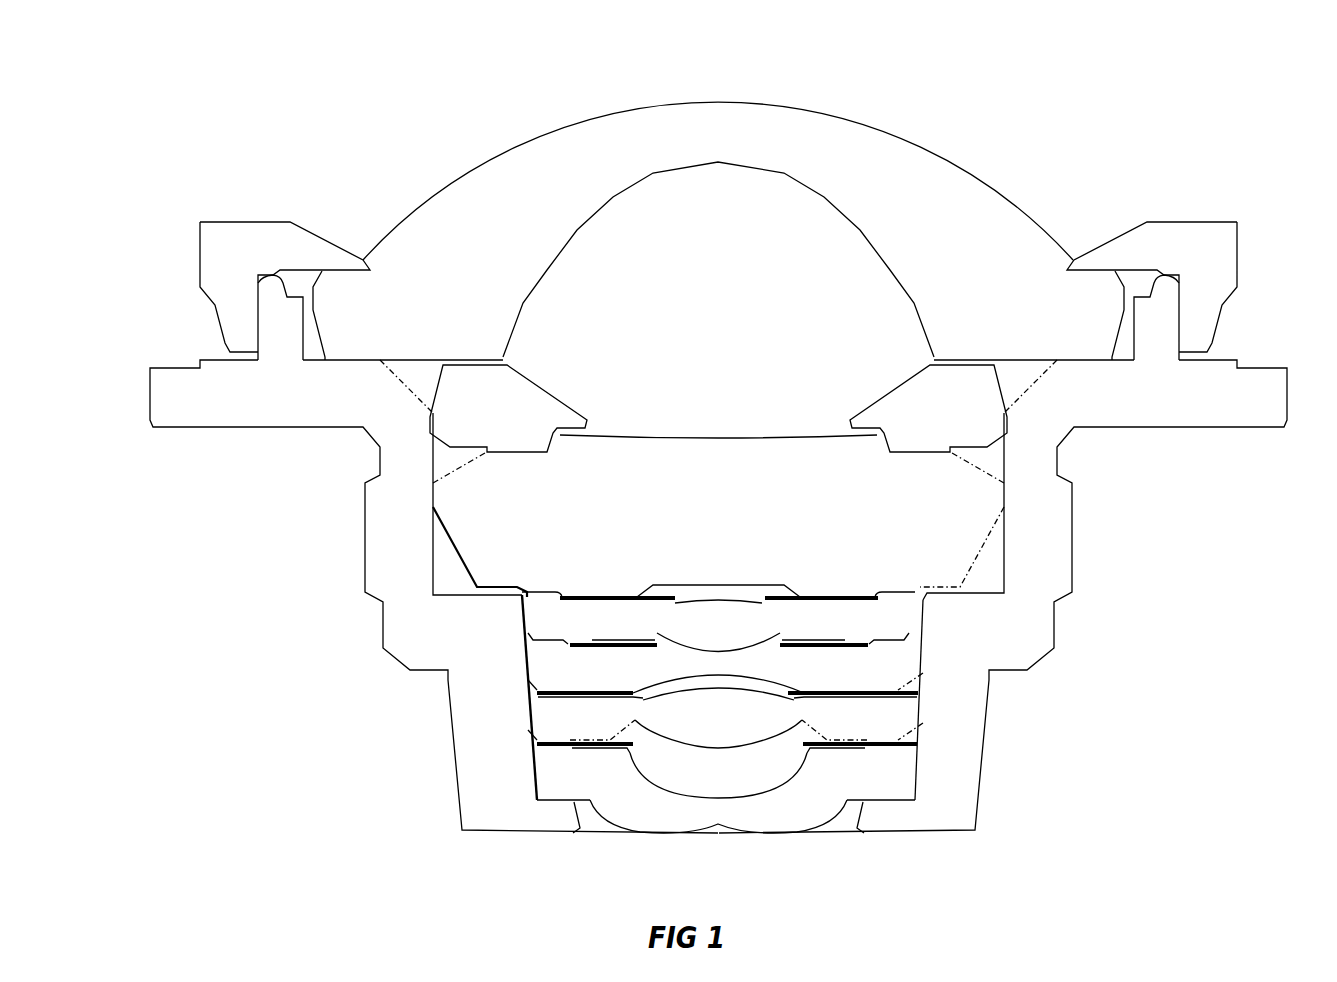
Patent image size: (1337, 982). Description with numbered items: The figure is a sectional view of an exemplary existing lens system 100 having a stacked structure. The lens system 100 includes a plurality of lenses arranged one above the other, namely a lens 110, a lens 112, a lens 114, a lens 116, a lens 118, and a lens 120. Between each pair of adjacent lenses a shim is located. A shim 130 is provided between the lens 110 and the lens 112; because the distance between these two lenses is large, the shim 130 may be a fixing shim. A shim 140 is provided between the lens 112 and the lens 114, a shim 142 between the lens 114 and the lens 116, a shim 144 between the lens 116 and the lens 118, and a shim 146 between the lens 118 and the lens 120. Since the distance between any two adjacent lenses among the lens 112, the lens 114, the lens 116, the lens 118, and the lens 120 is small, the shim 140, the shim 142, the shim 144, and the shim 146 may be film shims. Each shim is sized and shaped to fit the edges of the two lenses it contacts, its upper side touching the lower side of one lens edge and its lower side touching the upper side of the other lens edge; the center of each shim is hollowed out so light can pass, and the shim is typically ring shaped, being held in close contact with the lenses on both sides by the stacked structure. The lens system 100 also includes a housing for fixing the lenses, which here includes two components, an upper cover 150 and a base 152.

The lens system 100 is at (1083, 85).
The lens 110 is at (735, 142).
The lens 112 is at (734, 521).
The lens 114 is at (736, 630).
The lens 116 is at (737, 673).
The lens 118 is at (737, 724).
The lens 120 is at (737, 816).
The shim 130 is at (501, 414).
The shim 140 is at (587, 585).
The shim 142 is at (590, 632).
The shim 144 is at (590, 682).
The shim 146 is at (590, 732).
The upper cover 150 is at (253, 257).
The base 152 is at (418, 564).